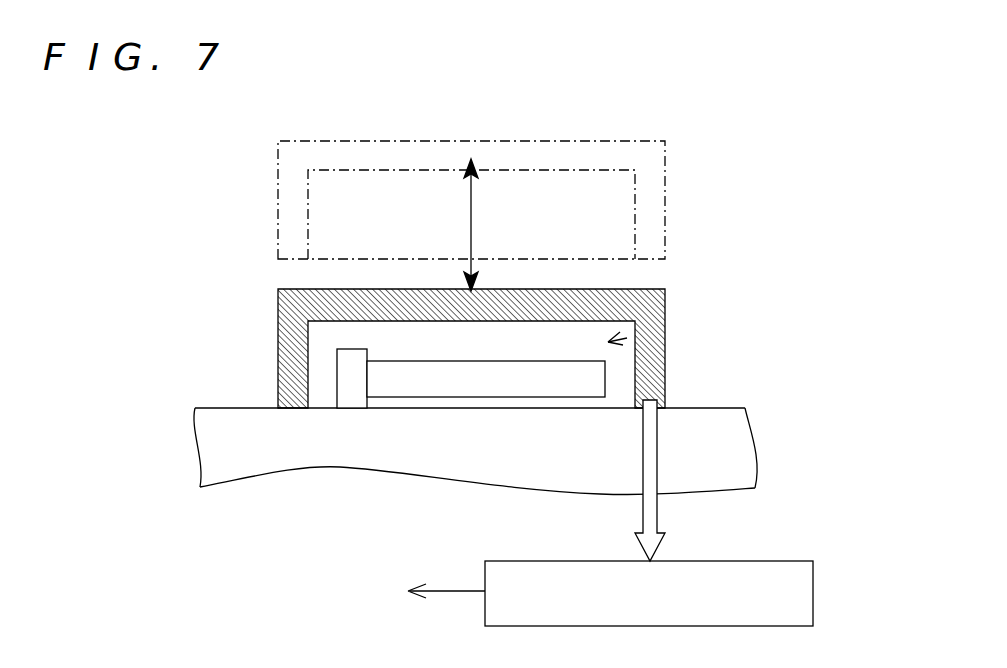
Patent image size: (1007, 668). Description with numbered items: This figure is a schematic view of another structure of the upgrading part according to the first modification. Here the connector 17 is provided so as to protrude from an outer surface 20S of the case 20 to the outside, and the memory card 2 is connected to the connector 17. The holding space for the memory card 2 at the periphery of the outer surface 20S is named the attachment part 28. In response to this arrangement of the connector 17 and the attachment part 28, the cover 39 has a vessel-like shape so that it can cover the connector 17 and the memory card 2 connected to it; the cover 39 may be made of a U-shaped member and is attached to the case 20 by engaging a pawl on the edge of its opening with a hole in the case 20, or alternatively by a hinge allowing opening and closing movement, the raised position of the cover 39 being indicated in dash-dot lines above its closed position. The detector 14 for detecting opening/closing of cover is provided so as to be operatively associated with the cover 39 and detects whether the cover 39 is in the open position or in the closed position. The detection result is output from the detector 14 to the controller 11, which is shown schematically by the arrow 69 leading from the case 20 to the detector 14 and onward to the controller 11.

The cover 39 is at (661, 233).
The attachment part 28 is at (665, 337).
The outer surface 20S is at (717, 408).
The case 20 is at (740, 452).
The connector 17 is at (350, 399).
The memory card 2 is at (477, 390).
The arrow 69 is at (657, 517).
The detector for detecting opening/closing of cover 14 is at (813, 592).
The controller 11 is at (335, 592).